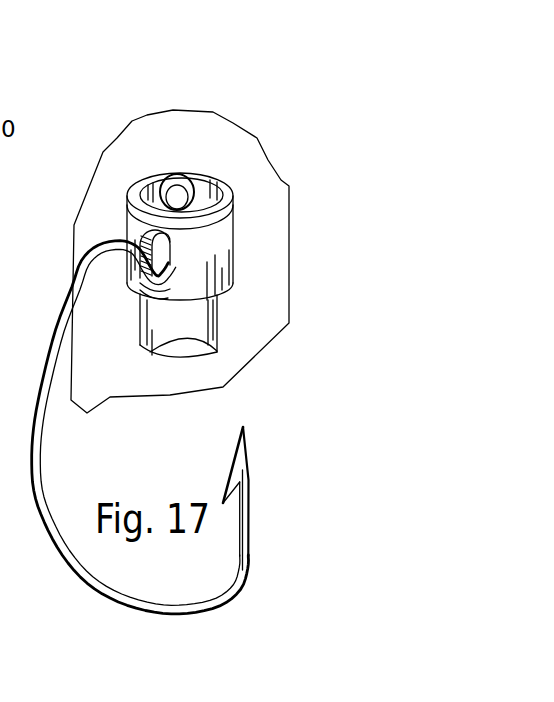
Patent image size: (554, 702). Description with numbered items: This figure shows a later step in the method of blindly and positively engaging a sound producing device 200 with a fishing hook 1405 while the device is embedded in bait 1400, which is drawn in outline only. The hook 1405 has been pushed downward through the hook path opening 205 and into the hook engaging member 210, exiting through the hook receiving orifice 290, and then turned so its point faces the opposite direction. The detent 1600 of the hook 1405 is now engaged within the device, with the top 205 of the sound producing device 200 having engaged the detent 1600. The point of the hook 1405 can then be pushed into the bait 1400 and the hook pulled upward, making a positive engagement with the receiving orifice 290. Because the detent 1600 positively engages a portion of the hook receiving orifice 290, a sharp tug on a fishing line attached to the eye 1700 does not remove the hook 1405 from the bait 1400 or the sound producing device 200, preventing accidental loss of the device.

The sound producing device 200 is at (247, 272).
The hook path opening 205 is at (198, 183).
The hook engaging member 210 is at (235, 225).
The hook receiving orifice 290 is at (170, 263).
The bait 1400 is at (132, 120).
The fishing hook 1405 is at (248, 550).
The detent 1600 is at (157, 283).
The eye 1700 is at (170, 173).